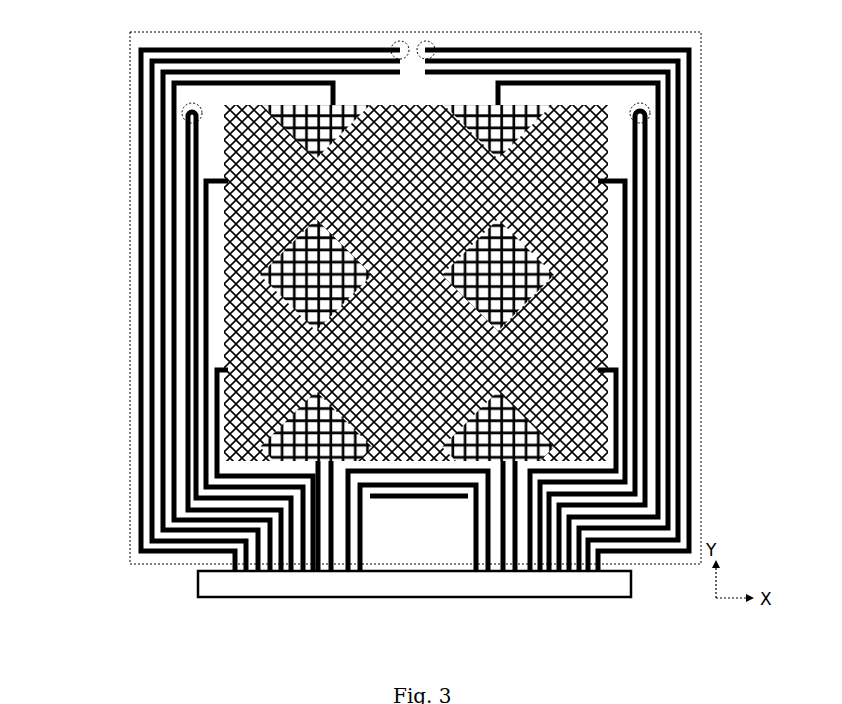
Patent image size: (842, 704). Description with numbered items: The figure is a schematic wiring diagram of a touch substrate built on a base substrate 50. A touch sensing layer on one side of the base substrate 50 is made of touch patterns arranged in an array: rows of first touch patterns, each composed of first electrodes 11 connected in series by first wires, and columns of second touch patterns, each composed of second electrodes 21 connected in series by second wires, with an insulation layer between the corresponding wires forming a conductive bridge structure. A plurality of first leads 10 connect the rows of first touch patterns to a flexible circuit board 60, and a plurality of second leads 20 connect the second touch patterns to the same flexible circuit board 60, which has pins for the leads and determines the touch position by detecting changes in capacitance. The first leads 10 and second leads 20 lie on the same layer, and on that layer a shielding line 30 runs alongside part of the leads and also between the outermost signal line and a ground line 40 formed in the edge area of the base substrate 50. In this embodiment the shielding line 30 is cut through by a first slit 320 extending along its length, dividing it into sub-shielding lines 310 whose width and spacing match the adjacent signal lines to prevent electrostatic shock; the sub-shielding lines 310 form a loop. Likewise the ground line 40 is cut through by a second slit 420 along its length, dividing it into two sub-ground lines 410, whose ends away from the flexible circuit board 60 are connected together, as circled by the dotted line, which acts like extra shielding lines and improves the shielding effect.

The first leads 10 is at (198, 296).
The first electrodes 11 is at (485, 375).
The second leads 20 is at (165, 220).
The second electrodes 21 is at (485, 440).
The shielding line 30 is at (152, 181).
The ground line 40 is at (445, 548).
The base substrate 50 is at (693, 45).
The flexible circuit board 60 is at (558, 577).
The sub-shielding lines 310 is at (178, 243).
The first slit 320 is at (188, 262).
The sub-ground lines 410 is at (140, 145).
The second slit 420 is at (130, 125).